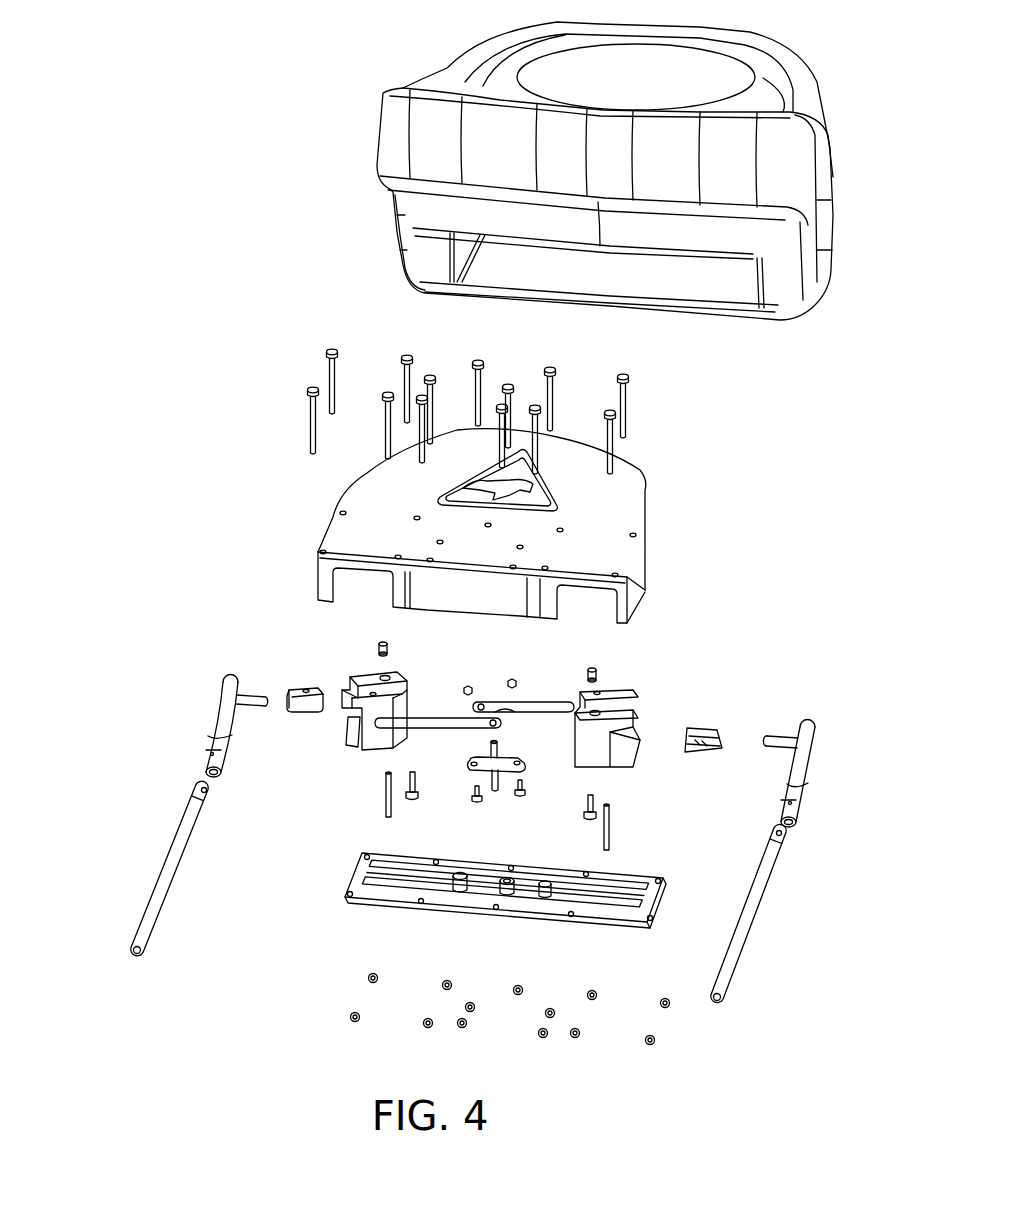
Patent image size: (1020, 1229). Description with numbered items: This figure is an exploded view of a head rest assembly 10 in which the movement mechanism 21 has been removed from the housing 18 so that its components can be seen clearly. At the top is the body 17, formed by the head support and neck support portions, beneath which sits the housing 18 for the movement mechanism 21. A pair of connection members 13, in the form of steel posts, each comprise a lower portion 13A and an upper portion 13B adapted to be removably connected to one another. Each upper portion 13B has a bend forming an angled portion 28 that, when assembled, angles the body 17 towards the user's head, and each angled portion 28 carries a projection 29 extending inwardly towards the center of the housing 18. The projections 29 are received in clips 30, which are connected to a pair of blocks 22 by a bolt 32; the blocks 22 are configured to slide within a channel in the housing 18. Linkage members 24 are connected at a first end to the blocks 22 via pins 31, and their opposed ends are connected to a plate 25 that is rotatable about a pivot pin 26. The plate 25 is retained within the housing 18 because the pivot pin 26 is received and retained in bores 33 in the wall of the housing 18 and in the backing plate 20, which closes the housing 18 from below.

The head rest assembly 10 is at (291, 324).
The body 17 is at (441, 97).
The housing 18 is at (648, 492).
The connection members 13 is at (189, 789).
The lower portion 13A is at (132, 953).
The upper portion 13B is at (194, 753).
The backing plate 20 is at (645, 930).
The movement mechanism 21 is at (349, 751).
The blocks 22 is at (357, 675).
The linkage members 24 is at (447, 722).
The plate 25 is at (472, 764).
The pivot pin 26 is at (497, 792).
The angled portion 28 is at (222, 713).
The projection 29 is at (248, 690).
The clips 30 is at (305, 690).
The pins 31 is at (387, 808).
The bolt 32 is at (413, 798).
The bores 33 is at (502, 890).